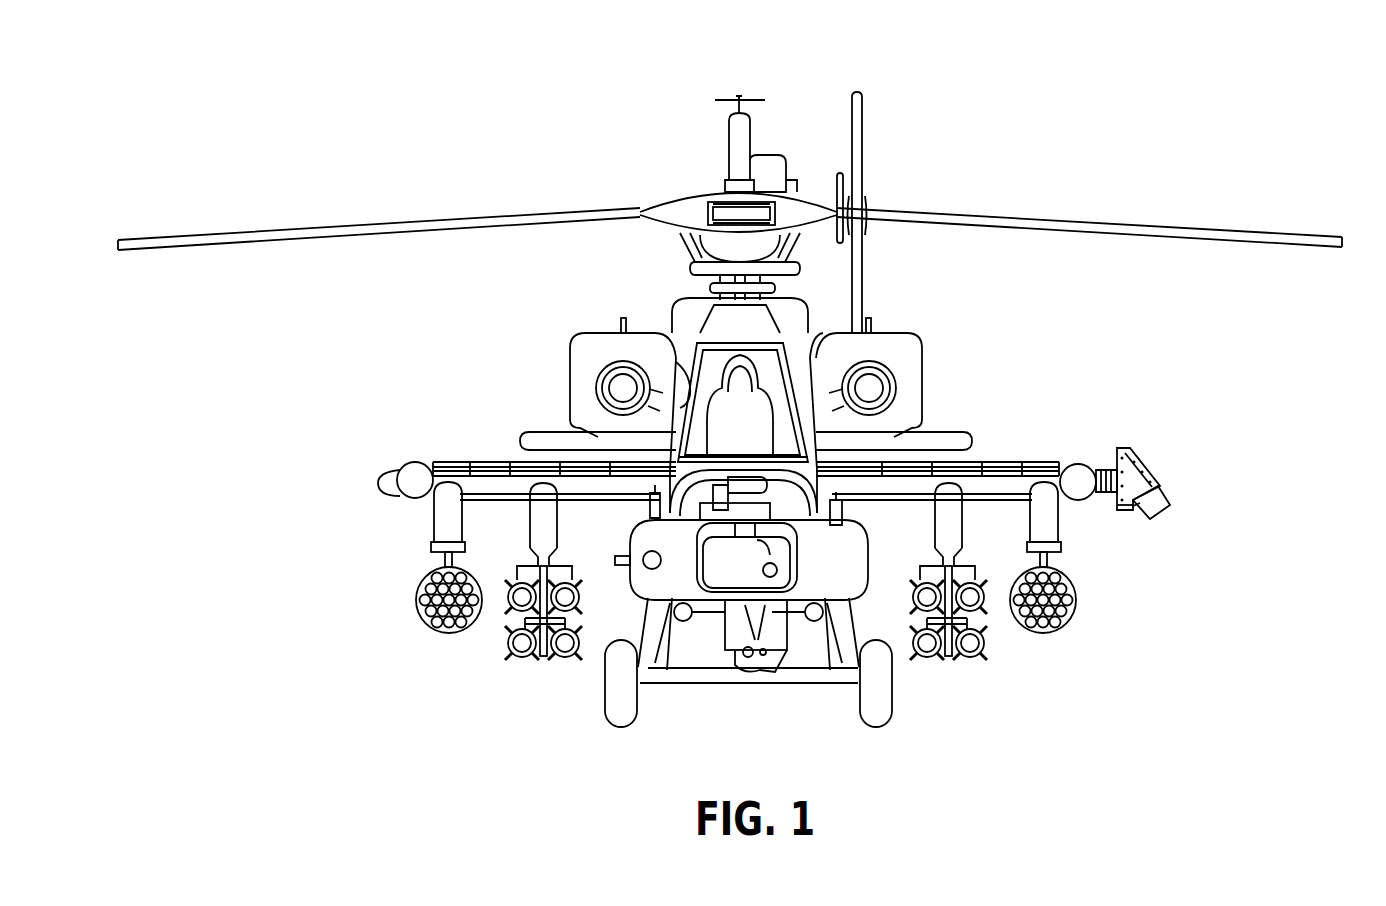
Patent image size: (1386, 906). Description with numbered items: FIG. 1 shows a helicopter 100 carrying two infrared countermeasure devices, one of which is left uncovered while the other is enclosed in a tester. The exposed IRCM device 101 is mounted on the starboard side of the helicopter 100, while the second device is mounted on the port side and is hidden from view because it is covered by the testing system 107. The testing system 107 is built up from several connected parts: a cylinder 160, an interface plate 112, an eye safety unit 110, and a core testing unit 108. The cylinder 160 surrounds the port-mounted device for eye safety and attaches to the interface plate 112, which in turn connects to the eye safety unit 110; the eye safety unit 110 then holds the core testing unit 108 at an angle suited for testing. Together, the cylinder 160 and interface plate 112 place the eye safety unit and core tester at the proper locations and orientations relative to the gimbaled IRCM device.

The helicopter 100 is at (300, 108).
The exposed IRCM device 101 is at (392, 477).
The cylinder 160 is at (1103, 468).
The testing system 107 is at (1147, 452).
The core testing unit 108 is at (1165, 512).
The eye safety unit 110 is at (1130, 512).
The interface plate 112 is at (1121, 512).